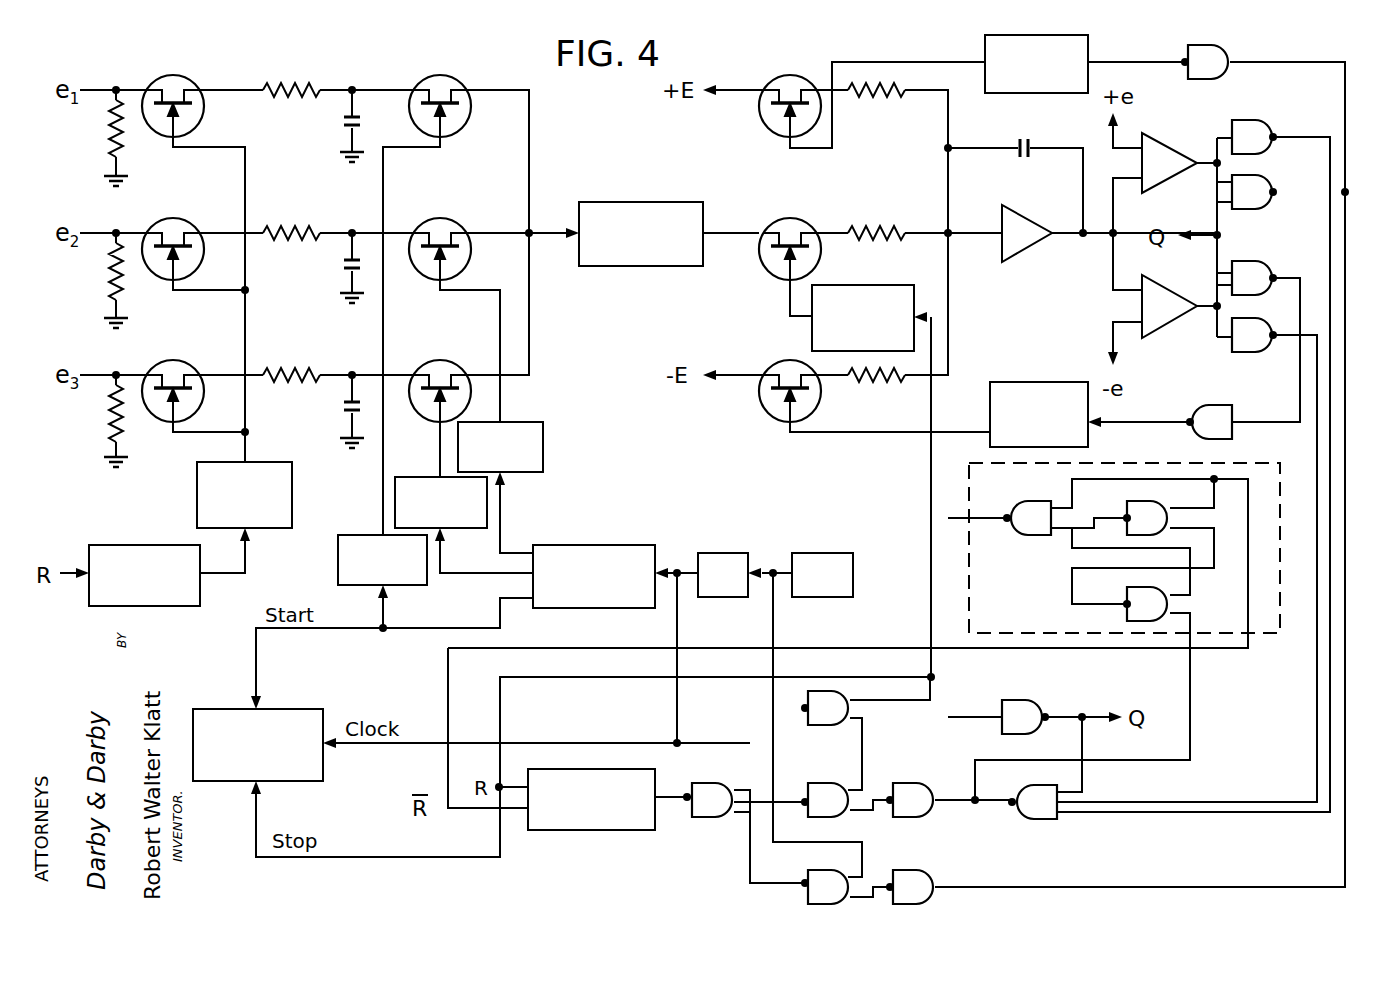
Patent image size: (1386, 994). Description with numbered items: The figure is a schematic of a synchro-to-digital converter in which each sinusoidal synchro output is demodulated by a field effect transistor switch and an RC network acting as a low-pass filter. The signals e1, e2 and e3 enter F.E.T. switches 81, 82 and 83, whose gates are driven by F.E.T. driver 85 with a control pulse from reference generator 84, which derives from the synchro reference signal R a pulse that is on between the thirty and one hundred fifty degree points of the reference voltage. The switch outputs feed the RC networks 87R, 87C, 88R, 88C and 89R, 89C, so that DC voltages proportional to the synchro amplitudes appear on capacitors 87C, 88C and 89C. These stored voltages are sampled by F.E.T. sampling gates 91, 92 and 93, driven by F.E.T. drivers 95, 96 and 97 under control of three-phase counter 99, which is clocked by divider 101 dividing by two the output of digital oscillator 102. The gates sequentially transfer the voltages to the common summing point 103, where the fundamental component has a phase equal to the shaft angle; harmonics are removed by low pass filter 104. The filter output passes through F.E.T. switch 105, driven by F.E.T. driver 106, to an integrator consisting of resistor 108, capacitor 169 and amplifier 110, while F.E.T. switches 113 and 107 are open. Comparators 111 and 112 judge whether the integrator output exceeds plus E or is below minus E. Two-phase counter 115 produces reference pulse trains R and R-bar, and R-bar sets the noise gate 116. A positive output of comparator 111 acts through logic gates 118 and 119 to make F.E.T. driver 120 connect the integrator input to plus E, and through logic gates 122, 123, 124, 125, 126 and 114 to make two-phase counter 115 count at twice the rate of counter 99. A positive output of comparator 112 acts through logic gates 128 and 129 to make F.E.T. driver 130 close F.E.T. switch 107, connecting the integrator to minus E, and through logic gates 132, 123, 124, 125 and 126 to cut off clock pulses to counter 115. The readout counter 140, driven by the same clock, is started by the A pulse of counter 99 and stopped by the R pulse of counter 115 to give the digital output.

The F.E.T. switch 81 is at (183, 80).
The F.E.T. switch 82 is at (204, 200).
The F.E.T. switch 83 is at (174, 362).
The reference generator 84 is at (154, 545).
The F.E.T. driver 85 is at (292, 497).
The resistor of RC filter network 87R is at (276, 90).
The resistor of RC filter network 88R is at (316, 230).
The resistor of RC filter network 89R is at (272, 373).
The capacitor 87C is at (344, 126).
The capacitor 88C is at (344, 268).
The capacitor 89C is at (344, 410).
The F.E.T. sampling gate 91 is at (436, 76).
The F.E.T. sampling gate 92 is at (436, 220).
The F.E.T. sampling gate 93 is at (436, 362).
The F.E.T. driver 95 is at (526, 422).
The F.E.T. driver 96 is at (422, 477).
The F.E.T. driver 97 is at (338, 564).
The three-phase counter 99 is at (574, 545).
The divider 101 is at (706, 553).
The digital oscillator 102 is at (807, 553).
The common summing point 103 is at (532, 230).
The low pass filter 104 is at (637, 202).
The F.E.T. switch 105 is at (784, 220).
The F.E.T. driver 106 is at (862, 285).
The F.E.T. switch 107 is at (778, 362).
The resistor 108 is at (860, 226).
The amplifier 110 is at (1048, 258).
The comparator 111 is at (1159, 136).
The comparator 112 is at (1188, 272).
The F.E.T. switch 113 is at (780, 74).
The logic gate 114 is at (896, 870).
The two-phase counter 115 is at (576, 830).
The noise gate 116 is at (804, 882).
The logic gate 118 is at (1264, 179).
The logic gate 119 is at (1232, 56).
The F.E.T. driver 120 is at (1088, 54).
The logic gate 122 is at (1264, 122).
The logic gate 123 is at (1026, 822).
The logic gate 124 is at (896, 783).
The logic gate 125 is at (830, 783).
The logic gate 126 is at (699, 824).
The logic gate 128 is at (1248, 264).
The logic gate 129 is at (1198, 404).
The F.E.T. driver 130 is at (1022, 382).
The logic gate 132 is at (1248, 350).
The readout counter 140 is at (305, 709).
The capacitor 169 is at (1014, 144).